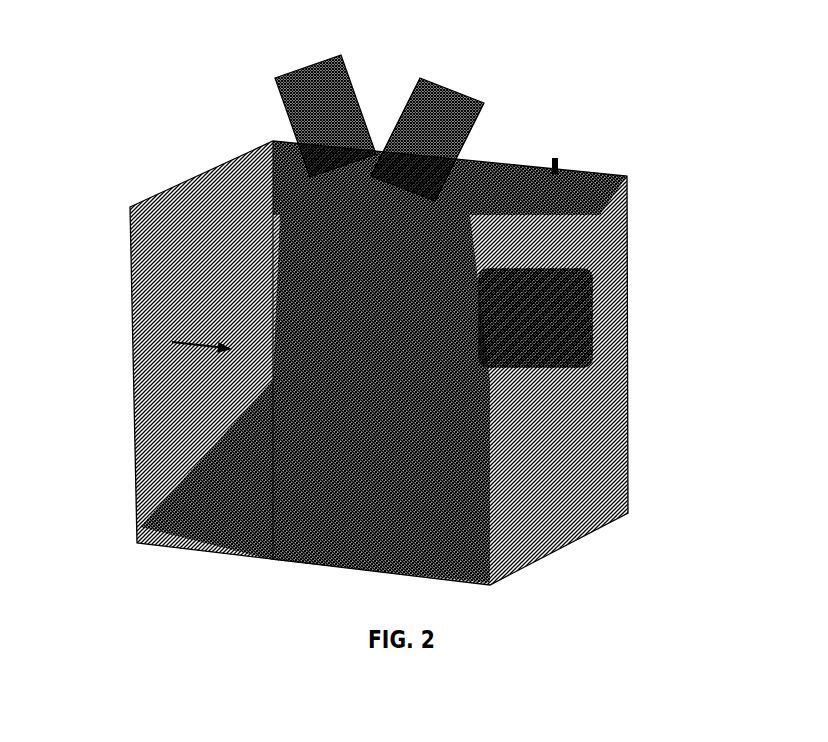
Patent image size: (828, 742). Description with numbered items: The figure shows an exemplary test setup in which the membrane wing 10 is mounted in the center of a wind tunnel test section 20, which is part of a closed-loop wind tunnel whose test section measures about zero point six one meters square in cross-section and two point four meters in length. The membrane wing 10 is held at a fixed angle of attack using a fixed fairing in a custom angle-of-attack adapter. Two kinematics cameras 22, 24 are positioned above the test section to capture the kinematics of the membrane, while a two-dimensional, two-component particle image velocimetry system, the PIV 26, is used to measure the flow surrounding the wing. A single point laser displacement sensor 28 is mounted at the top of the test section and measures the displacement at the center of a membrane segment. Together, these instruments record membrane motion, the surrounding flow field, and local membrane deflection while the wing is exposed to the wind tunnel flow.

The membrane wing 10 is at (133, 421).
The wind tunnel test section 20 is at (627, 374).
The kinematics camera 22 is at (352, 88).
The kinematics camera 24 is at (475, 92).
The 2D-2C PIV 26 is at (627, 282).
The single point laser displacement sensor 28 is at (571, 137).